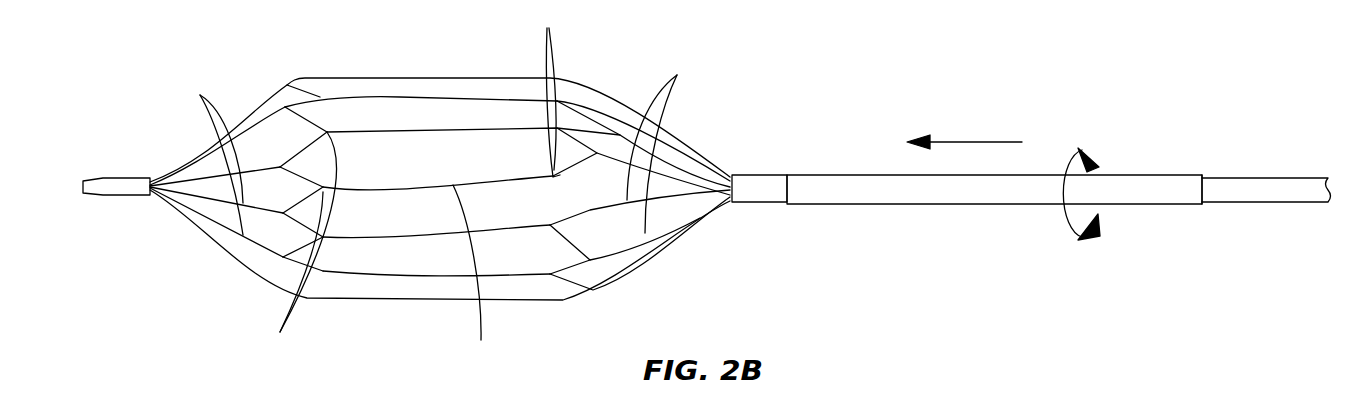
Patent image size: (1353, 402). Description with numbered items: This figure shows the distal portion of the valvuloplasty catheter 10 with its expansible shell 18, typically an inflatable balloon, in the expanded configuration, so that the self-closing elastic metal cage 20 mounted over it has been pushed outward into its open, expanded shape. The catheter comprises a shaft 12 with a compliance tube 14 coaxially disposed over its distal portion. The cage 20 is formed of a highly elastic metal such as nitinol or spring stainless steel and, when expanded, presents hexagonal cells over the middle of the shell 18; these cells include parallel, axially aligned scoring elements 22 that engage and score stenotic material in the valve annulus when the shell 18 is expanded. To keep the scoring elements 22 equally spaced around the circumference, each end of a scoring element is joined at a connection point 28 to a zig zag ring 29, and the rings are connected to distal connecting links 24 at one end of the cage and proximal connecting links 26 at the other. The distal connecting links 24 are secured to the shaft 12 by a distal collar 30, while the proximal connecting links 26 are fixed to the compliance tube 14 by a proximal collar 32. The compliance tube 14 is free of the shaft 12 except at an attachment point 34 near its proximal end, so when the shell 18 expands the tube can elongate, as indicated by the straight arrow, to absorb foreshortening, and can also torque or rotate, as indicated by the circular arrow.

The valvuloplasty catheter 10 is at (987, 81).
The shaft 12 is at (1237, 188).
The compliance tube 14 is at (827, 188).
The expansible shell 18 is at (377, 217).
The expansible metal cage 20 is at (413, 49).
The scoring elements 22 is at (487, 273).
The distal connecting links 24 is at (200, 96).
The proximal connecting links 26 is at (663, 139).
The connection point 28 is at (412, 183).
The zig zag ring 29 is at (288, 97).
The distal collar 30 is at (117, 180).
The proximal collar 32 is at (753, 185).
The attachment point 34 is at (1198, 173).